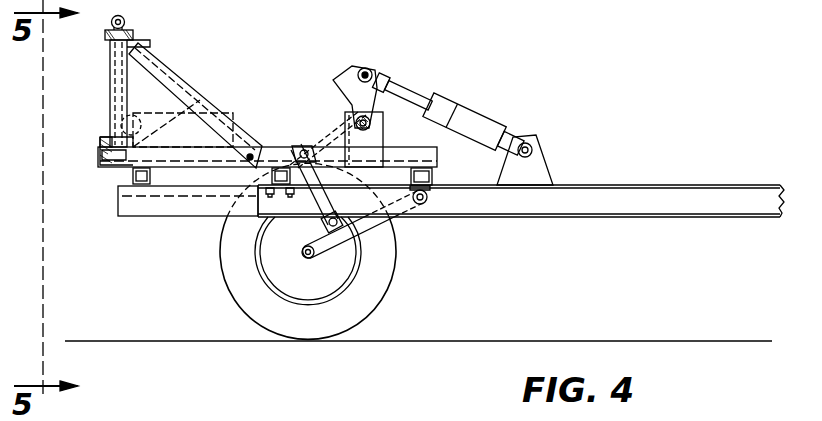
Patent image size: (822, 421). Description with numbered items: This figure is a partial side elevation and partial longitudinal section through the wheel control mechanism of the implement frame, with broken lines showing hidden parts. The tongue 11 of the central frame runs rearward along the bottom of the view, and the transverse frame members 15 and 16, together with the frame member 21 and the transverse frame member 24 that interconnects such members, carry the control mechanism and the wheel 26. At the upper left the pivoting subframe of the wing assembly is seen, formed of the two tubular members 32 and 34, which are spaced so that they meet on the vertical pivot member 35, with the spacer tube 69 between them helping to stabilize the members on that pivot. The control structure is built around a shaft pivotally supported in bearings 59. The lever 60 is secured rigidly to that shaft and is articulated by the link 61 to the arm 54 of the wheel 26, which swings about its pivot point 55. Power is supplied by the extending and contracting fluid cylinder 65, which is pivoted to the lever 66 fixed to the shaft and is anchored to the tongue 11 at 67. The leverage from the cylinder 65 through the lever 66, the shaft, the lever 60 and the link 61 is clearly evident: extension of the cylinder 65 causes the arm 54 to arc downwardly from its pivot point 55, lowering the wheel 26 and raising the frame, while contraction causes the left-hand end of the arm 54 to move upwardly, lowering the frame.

The tongue 11 is at (648, 191).
The transverse frame member 15 is at (433, 178).
The transverse frame member 16 is at (129, 179).
The frame member 21 is at (191, 202).
The transverse frame member 24 is at (281, 170).
The wheel 26 is at (386, 276).
The tubular member 32 is at (135, 122).
The tubular member 34 is at (178, 80).
The vertical pivot member 35 is at (125, 25).
The arm 54 is at (329, 256).
The pivot point 55 is at (430, 201).
The bearing 59 is at (355, 118).
The lever 60 is at (342, 136).
The link 61 is at (333, 178).
The fluid cylinder 65 is at (489, 118).
The lever 66 is at (347, 78).
The anchor 67 is at (540, 160).
The spacer tube 69 is at (111, 92).